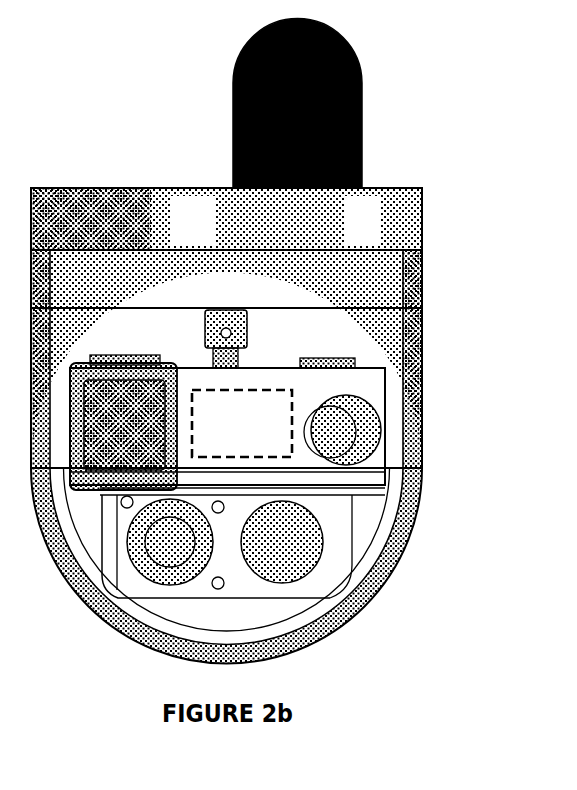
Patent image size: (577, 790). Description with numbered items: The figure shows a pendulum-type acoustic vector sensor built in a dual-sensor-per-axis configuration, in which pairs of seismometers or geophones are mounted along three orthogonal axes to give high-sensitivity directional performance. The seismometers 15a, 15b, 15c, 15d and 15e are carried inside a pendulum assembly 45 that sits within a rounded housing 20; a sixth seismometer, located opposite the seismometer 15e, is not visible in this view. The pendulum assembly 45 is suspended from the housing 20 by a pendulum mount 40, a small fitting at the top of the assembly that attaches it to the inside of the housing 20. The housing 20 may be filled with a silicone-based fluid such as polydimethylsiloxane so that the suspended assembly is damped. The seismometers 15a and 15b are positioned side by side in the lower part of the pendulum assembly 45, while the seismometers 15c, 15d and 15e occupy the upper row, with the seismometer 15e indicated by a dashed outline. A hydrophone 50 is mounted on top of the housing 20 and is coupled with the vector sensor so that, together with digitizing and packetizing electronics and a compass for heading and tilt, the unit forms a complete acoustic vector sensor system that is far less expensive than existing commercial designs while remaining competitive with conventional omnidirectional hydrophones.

The housing 20 is at (436, 381).
The hydrophone 50 is at (383, 121).
The pendulum mount 40 is at (259, 332).
The pendulum assembly 45 is at (395, 434).
The seismometer 15a is at (158, 555).
The seismometer 15b is at (262, 555).
The seismometer 15c is at (110, 440).
The seismometer 15d is at (310, 440).
The seismometer 15e is at (225, 440).